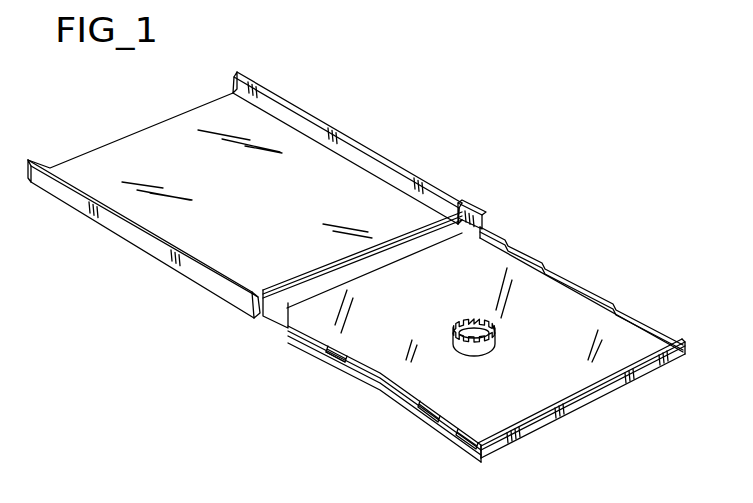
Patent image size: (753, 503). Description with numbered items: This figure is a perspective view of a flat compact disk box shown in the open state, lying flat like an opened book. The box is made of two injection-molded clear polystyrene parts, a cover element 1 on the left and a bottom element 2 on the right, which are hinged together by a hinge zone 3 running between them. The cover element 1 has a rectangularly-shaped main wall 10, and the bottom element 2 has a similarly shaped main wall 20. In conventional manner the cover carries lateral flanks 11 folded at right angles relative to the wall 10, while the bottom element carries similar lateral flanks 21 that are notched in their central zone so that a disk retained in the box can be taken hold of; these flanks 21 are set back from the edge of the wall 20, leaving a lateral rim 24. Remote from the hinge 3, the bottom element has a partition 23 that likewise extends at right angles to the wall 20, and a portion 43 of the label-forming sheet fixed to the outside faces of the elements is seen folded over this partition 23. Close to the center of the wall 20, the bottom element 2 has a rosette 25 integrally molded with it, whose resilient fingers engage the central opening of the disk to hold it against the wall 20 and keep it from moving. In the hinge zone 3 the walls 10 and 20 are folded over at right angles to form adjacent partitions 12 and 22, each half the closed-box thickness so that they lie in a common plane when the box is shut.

The cover element 1 is at (350, 132).
The bottom element 2 is at (560, 275).
The hinge zone 3 is at (337, 270).
The main wall of the cover element 10 is at (275, 203).
The lateral flanks 11 is at (277, 110).
The partition 12 is at (408, 232).
The main wall of the bottom element 20 is at (433, 310).
The lateral flanks 21 is at (597, 295).
The partition 22 is at (431, 238).
The partition 23 is at (637, 357).
The lateral rim 24 is at (323, 362).
The rosette 25 is at (505, 353).
The portion of the label-forming sheet 43 is at (638, 375).